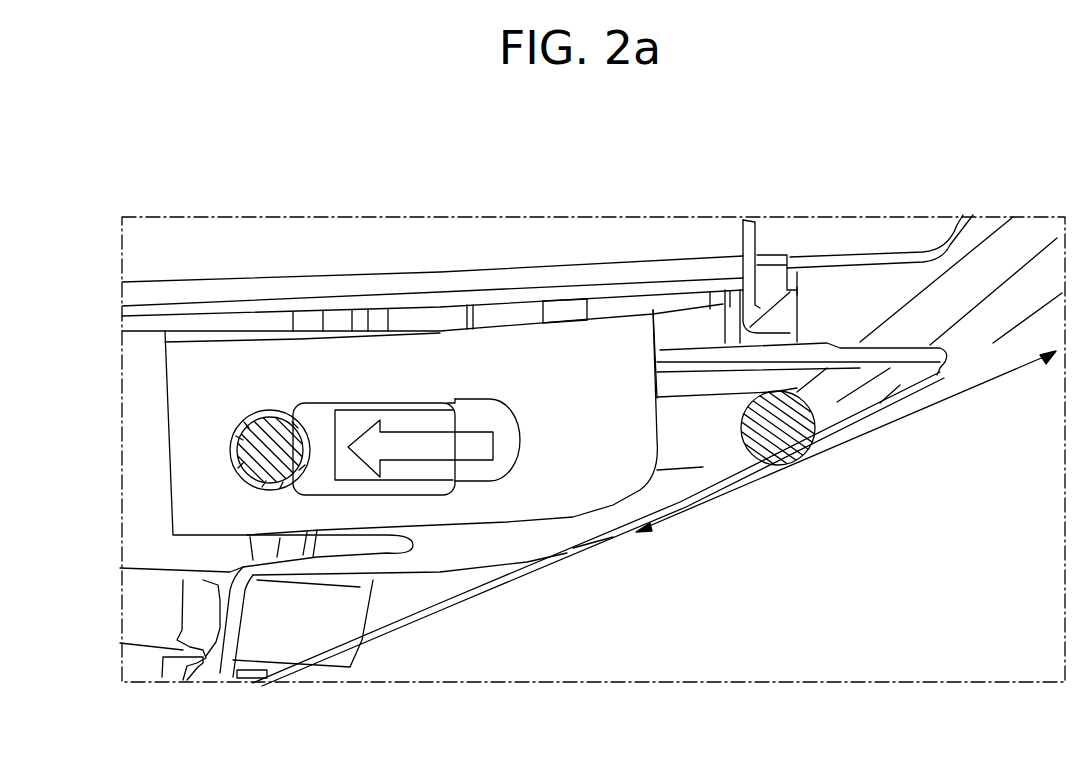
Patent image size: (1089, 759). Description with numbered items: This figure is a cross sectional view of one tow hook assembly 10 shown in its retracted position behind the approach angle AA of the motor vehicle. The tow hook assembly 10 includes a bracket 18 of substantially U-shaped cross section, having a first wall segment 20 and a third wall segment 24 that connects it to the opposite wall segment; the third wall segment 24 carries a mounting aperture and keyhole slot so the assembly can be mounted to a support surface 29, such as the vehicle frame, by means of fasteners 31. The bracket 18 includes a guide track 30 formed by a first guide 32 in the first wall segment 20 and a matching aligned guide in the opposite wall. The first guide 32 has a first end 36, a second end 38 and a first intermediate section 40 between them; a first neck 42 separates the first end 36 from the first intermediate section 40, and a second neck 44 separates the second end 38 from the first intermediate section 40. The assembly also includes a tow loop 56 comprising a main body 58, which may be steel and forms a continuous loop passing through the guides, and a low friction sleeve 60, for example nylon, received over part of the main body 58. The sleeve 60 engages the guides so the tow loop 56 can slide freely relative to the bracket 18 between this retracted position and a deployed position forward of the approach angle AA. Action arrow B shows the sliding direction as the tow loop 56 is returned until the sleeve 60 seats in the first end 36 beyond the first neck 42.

The tow hook assembly 10 is at (771, 581).
The bracket 18 is at (614, 505).
The first wall segment 20 is at (490, 500).
The third wall segment 24 is at (388, 328).
The support surface 29 is at (503, 310).
The guide track 30 is at (301, 399).
The fasteners 31 is at (323, 329).
The first guide 32 is at (378, 500).
The first end 36 is at (248, 431).
The second end 38 is at (513, 433).
The first intermediate section 40 is at (378, 401).
The first neck 42 is at (312, 413).
The second neck 44 is at (455, 401).
The tow loop 56 is at (710, 445).
The main body 58 is at (262, 482).
The sleeve 60 is at (240, 471).
The action arrow B is at (412, 444).
The approach angle AA is at (927, 393).